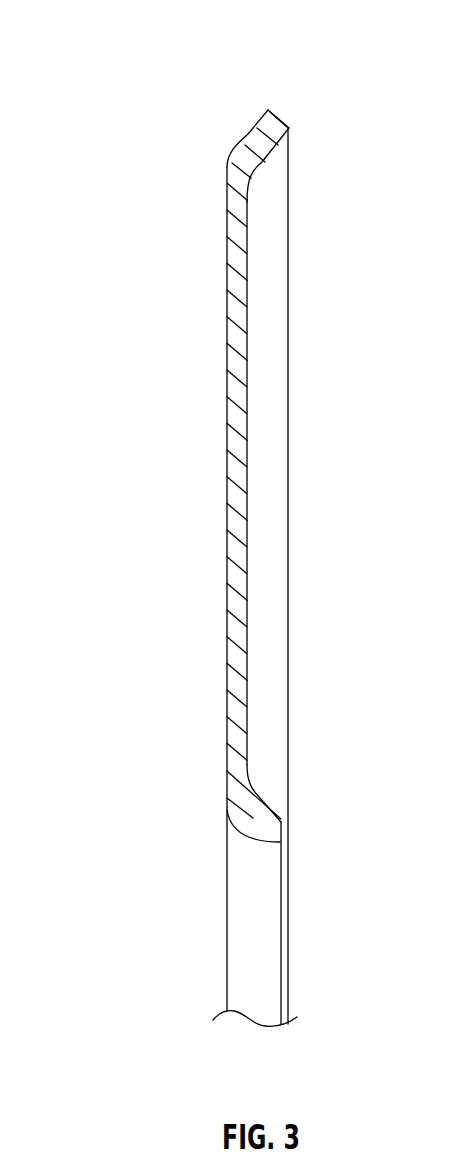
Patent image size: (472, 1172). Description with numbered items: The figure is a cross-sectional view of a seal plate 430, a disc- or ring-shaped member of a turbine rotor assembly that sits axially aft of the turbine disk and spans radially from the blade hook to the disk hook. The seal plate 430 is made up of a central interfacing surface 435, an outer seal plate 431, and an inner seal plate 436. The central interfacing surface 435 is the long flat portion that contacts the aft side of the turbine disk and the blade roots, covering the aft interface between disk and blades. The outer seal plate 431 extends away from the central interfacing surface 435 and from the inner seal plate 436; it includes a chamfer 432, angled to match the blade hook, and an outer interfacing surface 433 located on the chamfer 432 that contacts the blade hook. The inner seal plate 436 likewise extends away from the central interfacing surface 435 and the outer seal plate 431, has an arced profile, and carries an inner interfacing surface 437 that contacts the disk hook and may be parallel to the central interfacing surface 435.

The seal plate 430 is at (152, 70).
The outer seal plate 431 is at (246, 150).
The chamfer 432 is at (291, 117).
The outer interfacing surface 433 is at (284, 112).
The central interfacing surface 435 is at (227, 485).
The inner seal plate 436 is at (252, 813).
The inner interfacing surface 437 is at (289, 832).